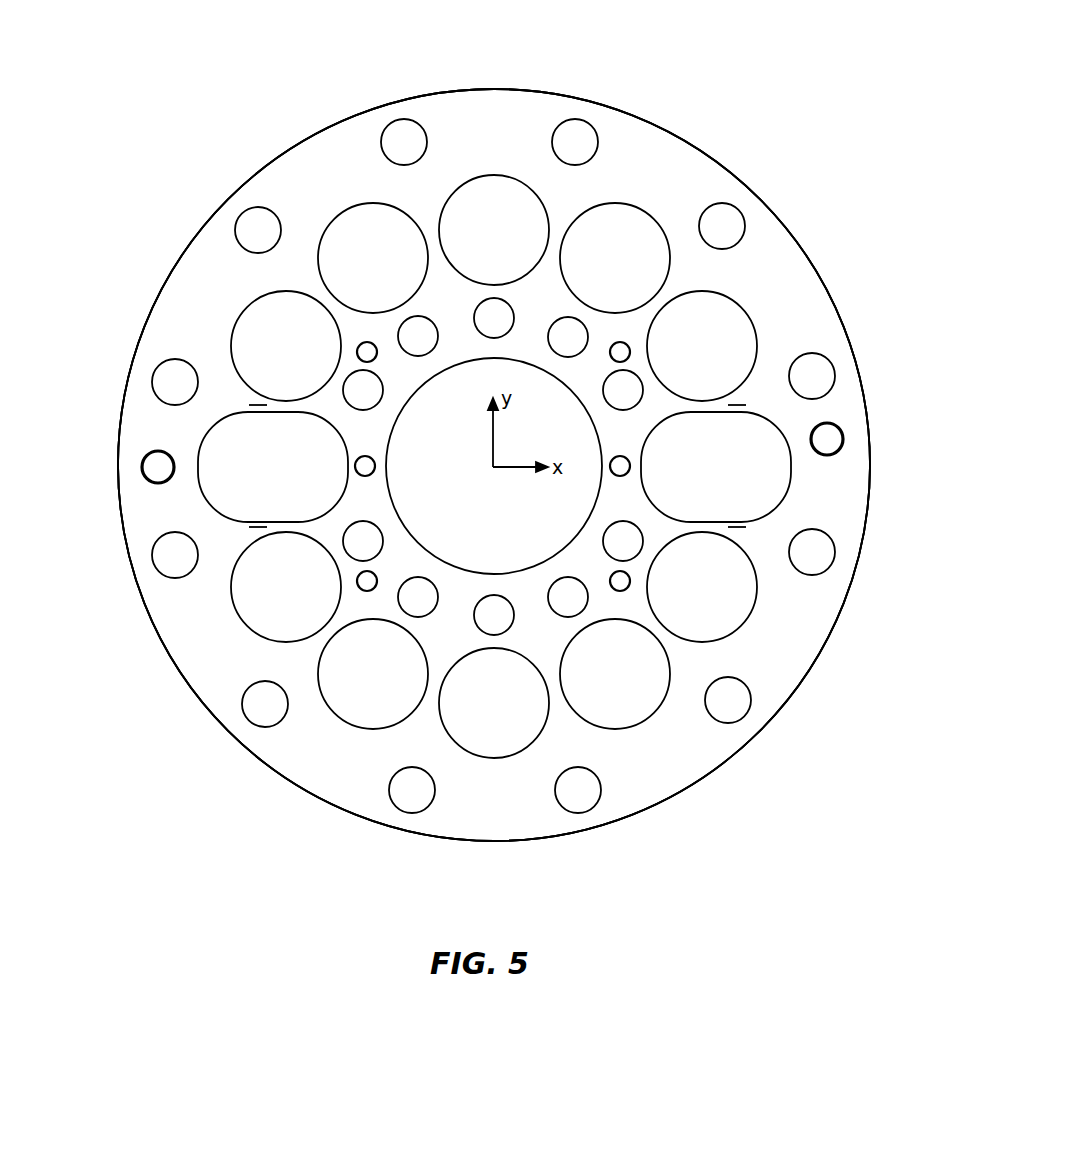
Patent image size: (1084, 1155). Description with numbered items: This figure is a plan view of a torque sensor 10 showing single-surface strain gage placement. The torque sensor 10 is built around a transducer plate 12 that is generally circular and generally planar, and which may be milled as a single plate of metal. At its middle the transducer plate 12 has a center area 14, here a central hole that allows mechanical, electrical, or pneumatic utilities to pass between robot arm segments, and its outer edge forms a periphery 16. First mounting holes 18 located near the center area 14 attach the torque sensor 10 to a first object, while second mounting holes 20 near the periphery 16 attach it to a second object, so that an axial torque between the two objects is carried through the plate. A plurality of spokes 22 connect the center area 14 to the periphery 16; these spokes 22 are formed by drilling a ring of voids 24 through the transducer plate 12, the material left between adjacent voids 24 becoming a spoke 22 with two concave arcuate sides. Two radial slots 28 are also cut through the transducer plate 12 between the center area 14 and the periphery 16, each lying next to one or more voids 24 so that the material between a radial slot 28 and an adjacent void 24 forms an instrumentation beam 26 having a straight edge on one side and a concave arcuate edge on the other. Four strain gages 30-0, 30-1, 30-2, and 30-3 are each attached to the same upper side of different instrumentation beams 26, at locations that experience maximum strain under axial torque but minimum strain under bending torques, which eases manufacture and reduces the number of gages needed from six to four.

The torque sensor 10 is at (638, 72).
The transducer plate 12 is at (685, 278).
The center area 14 is at (442, 515).
The periphery 16 is at (753, 660).
The first mounting holes 18 is at (412, 340).
The second mounting holes 20 is at (258, 227).
The spokes 22 is at (555, 230).
The voids 24 is at (615, 258).
The instrumentation beam 26 is at (685, 528).
The radial slots 28 is at (716, 467).
The strain gage 30-0 is at (737, 527).
The strain gage 30-1 is at (737, 405).
The strain gage 30-2 is at (258, 527).
The strain gage 30-3 is at (258, 405).